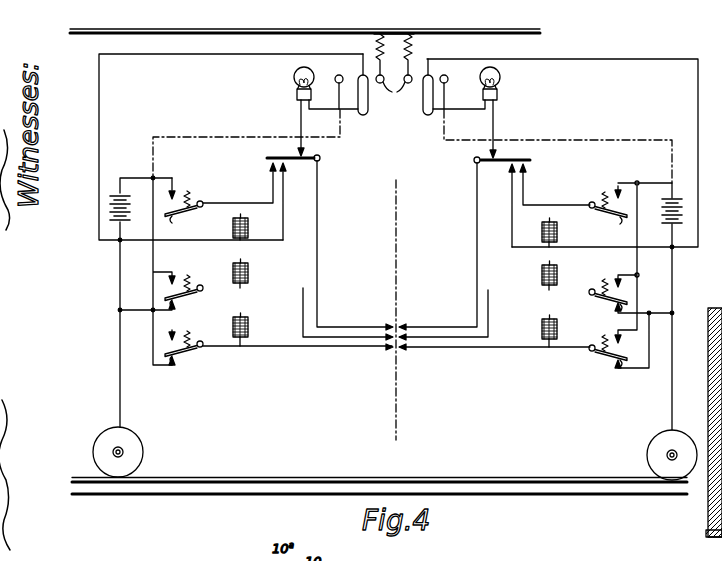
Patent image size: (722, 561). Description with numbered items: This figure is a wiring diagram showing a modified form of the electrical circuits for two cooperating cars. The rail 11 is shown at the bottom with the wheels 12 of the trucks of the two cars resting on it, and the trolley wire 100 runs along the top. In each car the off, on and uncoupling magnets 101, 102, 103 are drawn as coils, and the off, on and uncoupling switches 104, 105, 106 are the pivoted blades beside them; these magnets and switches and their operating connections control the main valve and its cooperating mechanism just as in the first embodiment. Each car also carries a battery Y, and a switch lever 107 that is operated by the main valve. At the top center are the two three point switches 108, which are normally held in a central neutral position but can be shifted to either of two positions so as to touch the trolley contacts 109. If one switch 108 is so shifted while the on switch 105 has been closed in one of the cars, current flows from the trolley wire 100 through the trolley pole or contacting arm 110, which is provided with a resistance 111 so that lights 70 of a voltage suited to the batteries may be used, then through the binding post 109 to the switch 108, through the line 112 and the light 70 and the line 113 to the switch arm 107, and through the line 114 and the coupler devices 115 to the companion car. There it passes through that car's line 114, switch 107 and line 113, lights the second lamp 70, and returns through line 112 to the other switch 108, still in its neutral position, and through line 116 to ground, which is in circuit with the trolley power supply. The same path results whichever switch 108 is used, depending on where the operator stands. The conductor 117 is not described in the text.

The trolley wire 100 is at (203, 35).
The rail 11 is at (348, 478).
The wheels 12 is at (137, 452).
The line to ground 116 is at (100, 79).
The battery y is at (119, 193).
The light 70 is at (294, 76).
The line 113 is at (300, 122).
The three point switch 108 is at (418, 102).
The line 112 is at (412, 129).
The resistance 111 is at (394, 54).
The trolley pole or contacting arm 110 is at (418, 44).
The trolley contact 109 is at (394, 91).
The switch lever 107 is at (267, 158).
The conductor to controller contact 117 is at (318, 237).
The line 114 is at (477, 249).
The coupler devices 115 is at (401, 327).
The uncoupling switch 106 is at (180, 216).
The on switch 105 is at (612, 300).
The off switch 104 is at (612, 358).
The uncoupling magnet 103 is at (249, 237).
The on magnet 102 is at (250, 273).
The off magnet 101 is at (249, 329).